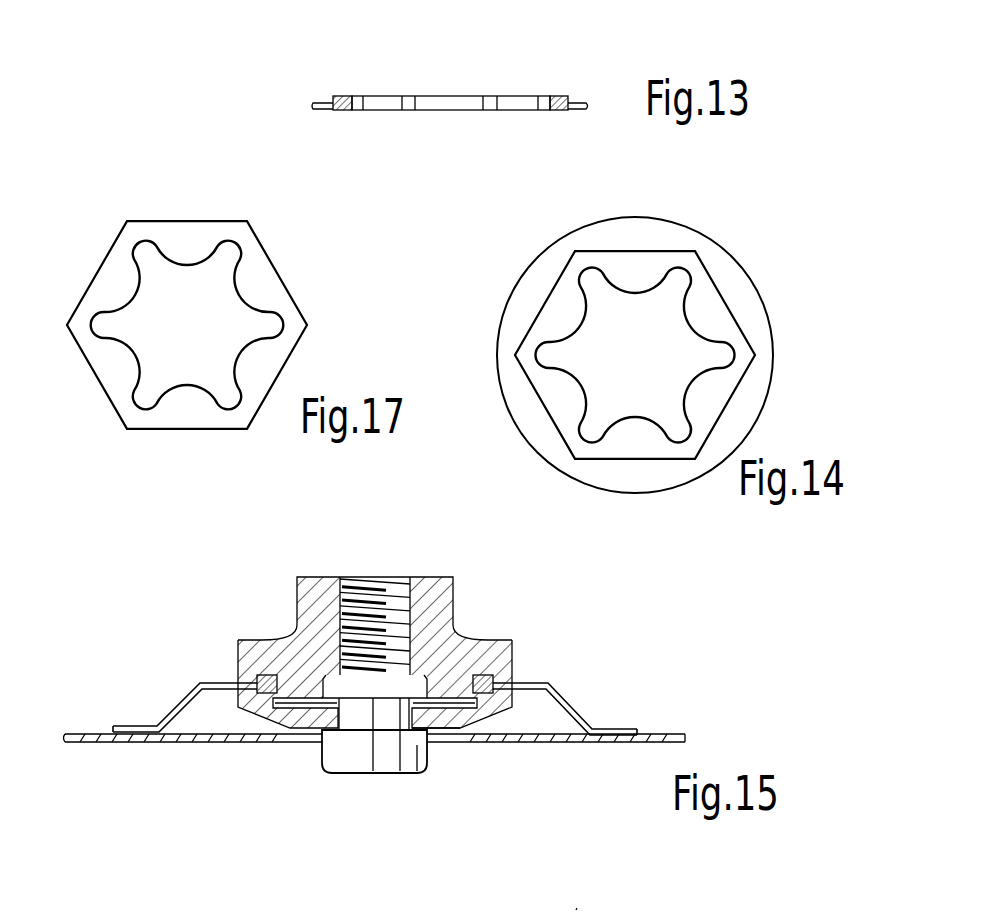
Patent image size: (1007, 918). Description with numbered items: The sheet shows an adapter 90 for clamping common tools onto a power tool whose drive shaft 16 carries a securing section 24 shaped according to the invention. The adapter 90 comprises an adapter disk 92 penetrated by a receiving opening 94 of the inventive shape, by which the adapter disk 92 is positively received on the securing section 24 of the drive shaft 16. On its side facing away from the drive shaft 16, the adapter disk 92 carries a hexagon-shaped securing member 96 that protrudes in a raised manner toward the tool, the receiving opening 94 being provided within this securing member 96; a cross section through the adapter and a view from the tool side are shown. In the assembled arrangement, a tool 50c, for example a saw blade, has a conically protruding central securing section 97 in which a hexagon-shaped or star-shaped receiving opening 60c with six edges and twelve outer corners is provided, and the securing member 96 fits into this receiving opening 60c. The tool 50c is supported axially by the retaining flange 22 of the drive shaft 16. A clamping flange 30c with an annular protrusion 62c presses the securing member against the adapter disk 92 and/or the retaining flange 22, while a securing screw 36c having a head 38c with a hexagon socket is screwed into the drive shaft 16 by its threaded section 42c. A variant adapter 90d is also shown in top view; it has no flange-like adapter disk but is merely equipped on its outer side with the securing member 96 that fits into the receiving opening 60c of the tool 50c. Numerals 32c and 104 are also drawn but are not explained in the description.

In FIG. 13, the adapter 90 is at (283, 85).
In FIG. 14, the adapter 90 is at (478, 333).
In FIG. 17, the adapter 90d is at (95, 243).
In FIG. 13, the adapter disk 92 is at (556, 110).
In FIG. 14, the adapter disk 92 is at (735, 292).
In FIG. 15, the adapter disk 92 is at (482, 677).
In FIG. 13, the receiving opening 94 is at (458, 105).
In FIG. 17, the receiving opening 94 is at (215, 298).
In FIG. 14, the receiving opening 94 is at (640, 390).
In FIG. 13, the securing member 96 is at (562, 99).
In FIG. 17, the securing member 96 is at (118, 368).
In FIG. 14, the securing member 96 is at (715, 383).
In FIG. 15, the drive shaft 16 is at (437, 628).
In FIG. 15, the retaining flange 22 is at (500, 657).
In FIG. 15, the securing section 24 is at (290, 693).
In FIG. 15, the threaded section 42c is at (388, 600).
In FIG. 15, the securing section 97 is at (173, 712).
In FIG. 15, the tool 50c is at (688, 717).
In FIG. 15, the receiving opening 60c is at (267, 697).
In FIG. 15, the annular protrusion 62c is at (543, 742).
In FIG. 15, the clamping flange 30c is at (487, 703).
In FIG. 15, the bottom face of nut 32c is at (447, 730).
In FIG. 15, the securing screw 36c is at (323, 775).
In FIG. 15, the head 38c is at (363, 743).
In FIG. 15, the component 104 is at (572, 917).